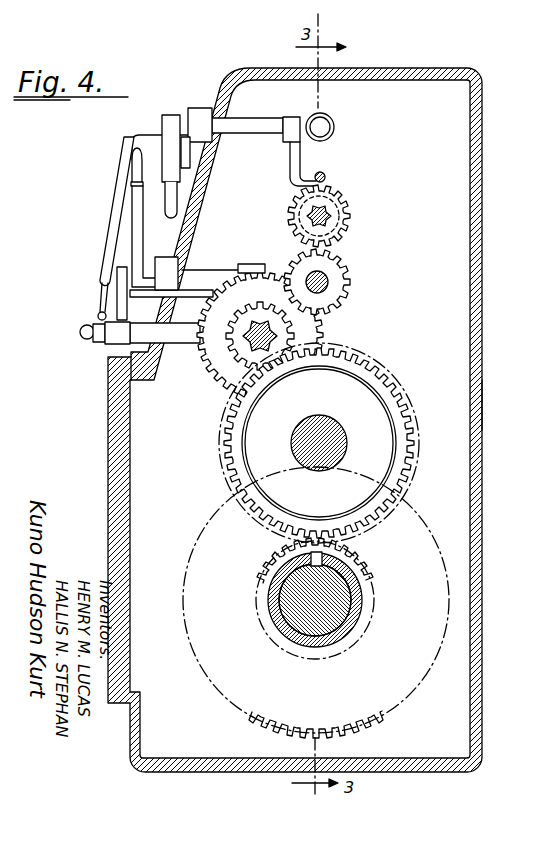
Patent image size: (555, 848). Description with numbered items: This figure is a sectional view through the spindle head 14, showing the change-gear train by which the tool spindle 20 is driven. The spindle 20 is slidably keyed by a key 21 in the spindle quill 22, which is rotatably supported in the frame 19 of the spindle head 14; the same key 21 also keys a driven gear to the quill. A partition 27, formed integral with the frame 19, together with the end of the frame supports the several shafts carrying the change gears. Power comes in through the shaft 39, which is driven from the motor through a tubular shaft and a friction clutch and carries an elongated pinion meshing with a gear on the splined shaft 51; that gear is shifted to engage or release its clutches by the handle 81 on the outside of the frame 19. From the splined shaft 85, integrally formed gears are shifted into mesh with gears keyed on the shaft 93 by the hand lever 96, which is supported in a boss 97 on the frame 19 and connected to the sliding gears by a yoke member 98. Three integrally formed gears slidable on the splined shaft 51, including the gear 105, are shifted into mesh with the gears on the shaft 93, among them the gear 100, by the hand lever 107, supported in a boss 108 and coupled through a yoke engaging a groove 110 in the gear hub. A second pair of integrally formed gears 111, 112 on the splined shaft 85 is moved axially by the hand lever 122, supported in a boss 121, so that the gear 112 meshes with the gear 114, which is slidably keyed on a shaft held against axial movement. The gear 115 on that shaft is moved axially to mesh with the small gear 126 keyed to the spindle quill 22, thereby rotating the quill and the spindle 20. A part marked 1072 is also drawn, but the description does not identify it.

The spindle head 14 is at (484, 405).
The frame 19 is at (488, 225).
The tool spindle 20 is at (292, 610).
The key 21 is at (285, 552).
The spindle quill 22 is at (360, 618).
The partition 27 is at (322, 434).
The shaft 39 is at (334, 127).
The splined shaft 51 is at (322, 212).
The handle 81 is at (113, 245).
The splined shaft 85 is at (247, 342).
The shaft 93 is at (328, 290).
The hand lever 96 is at (133, 203).
The boss 97 is at (158, 262).
The yoke member 98 is at (245, 264).
The gear 100 is at (350, 292).
The gear 105 is at (350, 218).
The hand lever 107 is at (170, 118).
The boss 108 is at (205, 108).
The groove 110 is at (295, 167).
The gear 111 is at (258, 286).
The gear 112 is at (295, 328).
The gear 114 is at (387, 378).
The gear 115 is at (295, 534).
The boss 121 is at (143, 312).
The hand lever 122 is at (90, 340).
The small gear 126 is at (365, 565).
The stop pin 1072 is at (323, 174).